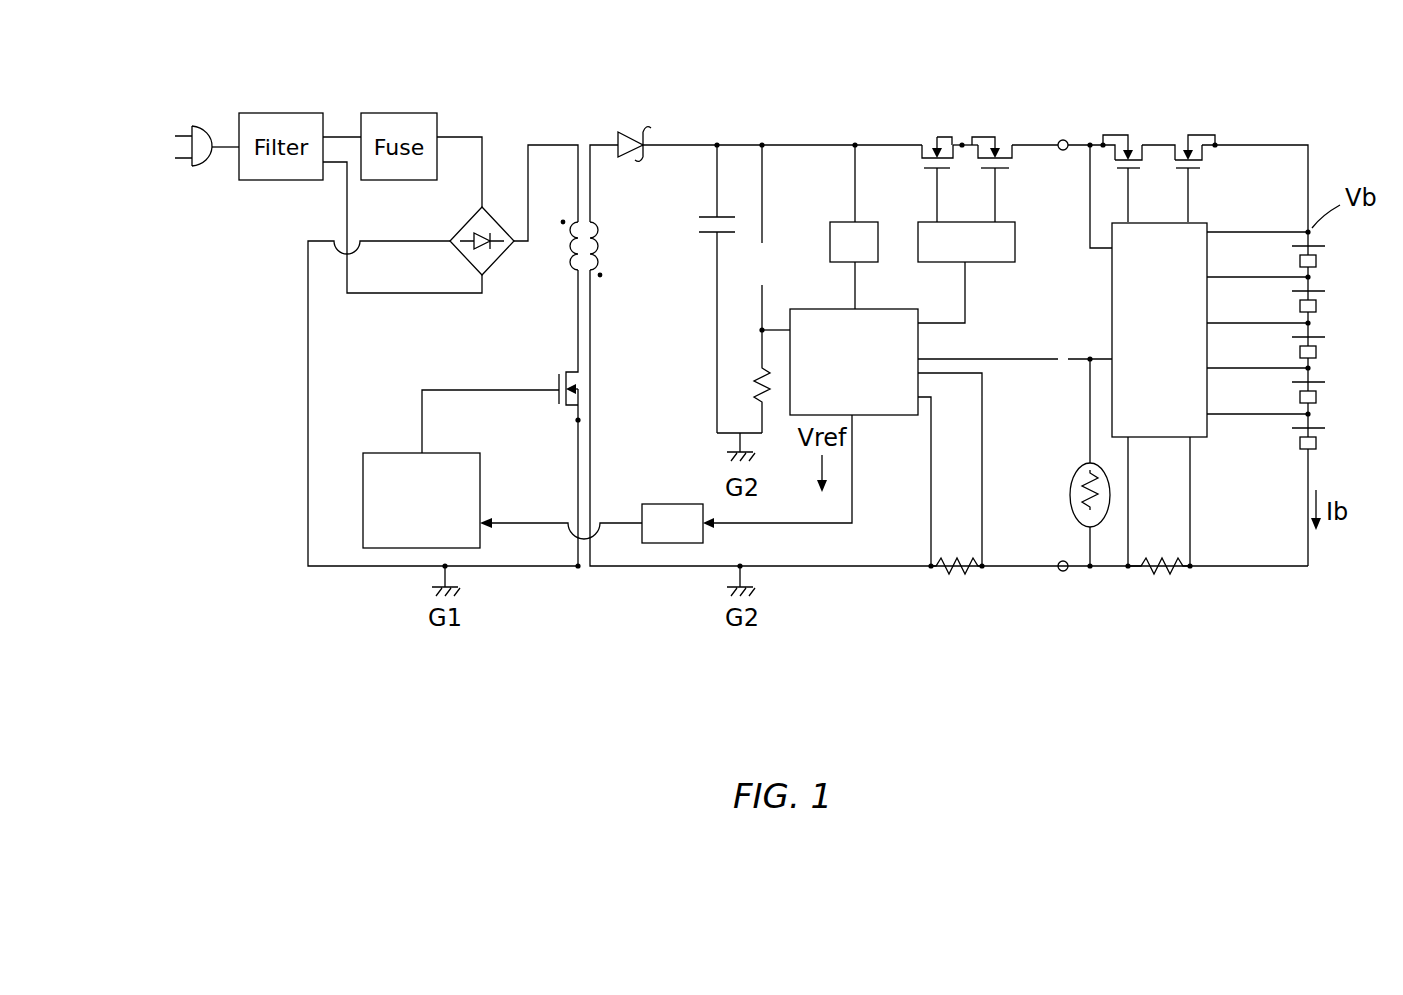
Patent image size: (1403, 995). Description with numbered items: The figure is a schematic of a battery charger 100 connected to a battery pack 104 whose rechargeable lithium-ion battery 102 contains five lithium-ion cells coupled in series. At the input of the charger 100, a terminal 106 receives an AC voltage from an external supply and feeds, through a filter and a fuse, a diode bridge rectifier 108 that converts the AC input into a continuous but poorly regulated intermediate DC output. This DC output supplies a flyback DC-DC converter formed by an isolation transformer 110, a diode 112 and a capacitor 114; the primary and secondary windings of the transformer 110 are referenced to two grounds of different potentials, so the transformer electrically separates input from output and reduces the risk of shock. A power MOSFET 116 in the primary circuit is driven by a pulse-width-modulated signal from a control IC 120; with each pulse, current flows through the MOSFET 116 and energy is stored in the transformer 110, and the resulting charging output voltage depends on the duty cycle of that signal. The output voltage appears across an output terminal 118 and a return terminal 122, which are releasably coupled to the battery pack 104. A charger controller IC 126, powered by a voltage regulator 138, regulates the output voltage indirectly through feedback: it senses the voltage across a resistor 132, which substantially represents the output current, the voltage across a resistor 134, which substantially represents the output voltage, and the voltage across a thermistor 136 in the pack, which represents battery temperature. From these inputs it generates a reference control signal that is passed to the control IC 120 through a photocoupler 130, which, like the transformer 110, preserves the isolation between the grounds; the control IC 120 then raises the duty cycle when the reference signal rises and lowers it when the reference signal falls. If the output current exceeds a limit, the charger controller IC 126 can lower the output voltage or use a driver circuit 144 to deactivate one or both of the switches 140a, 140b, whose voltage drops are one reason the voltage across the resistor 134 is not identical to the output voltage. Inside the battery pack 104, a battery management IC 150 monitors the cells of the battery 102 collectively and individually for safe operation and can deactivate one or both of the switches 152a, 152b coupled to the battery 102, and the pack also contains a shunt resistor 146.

The battery charger 100 is at (1042, 637).
The rechargeable lithium-ion battery 102 is at (1340, 240).
The battery pack 104 is at (1062, 637).
The terminal 106 is at (198, 167).
The diode bridge rectifier 108 is at (457, 225).
The isolation transformer 110 is at (566, 273).
The diode 112 is at (626, 168).
The capacitor 114 is at (714, 236).
The power transistor (MOSFET) 116 is at (568, 410).
The output terminal 118 is at (1068, 141).
The control IC 120 is at (390, 453).
The return terminal 122 is at (1068, 572).
The charger controller IC 126 is at (880, 309).
The photocoupler 130 is at (668, 504).
The resistor 132 is at (960, 574).
The resistor 134 is at (758, 368).
The thermistor 136 is at (1075, 472).
The voltage regulator 138 is at (832, 222).
The switch 140a is at (924, 168).
The switch 140b is at (1009, 168).
The driver circuit 144 is at (992, 262).
The shunt resistor 146 is at (1165, 574).
The battery management IC 150 is at (1140, 390).
The switch 152a is at (1140, 168).
The switch 152b is at (1200, 168).